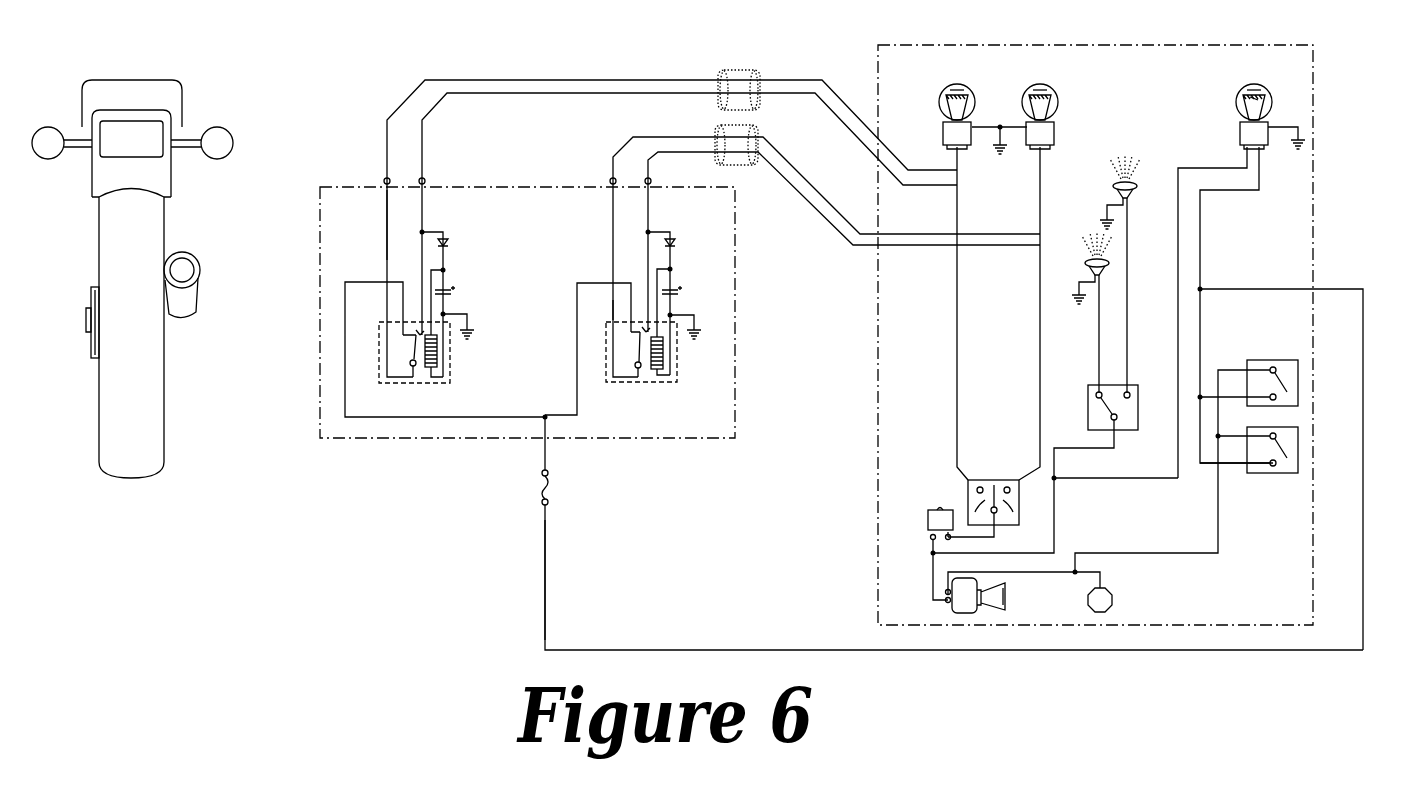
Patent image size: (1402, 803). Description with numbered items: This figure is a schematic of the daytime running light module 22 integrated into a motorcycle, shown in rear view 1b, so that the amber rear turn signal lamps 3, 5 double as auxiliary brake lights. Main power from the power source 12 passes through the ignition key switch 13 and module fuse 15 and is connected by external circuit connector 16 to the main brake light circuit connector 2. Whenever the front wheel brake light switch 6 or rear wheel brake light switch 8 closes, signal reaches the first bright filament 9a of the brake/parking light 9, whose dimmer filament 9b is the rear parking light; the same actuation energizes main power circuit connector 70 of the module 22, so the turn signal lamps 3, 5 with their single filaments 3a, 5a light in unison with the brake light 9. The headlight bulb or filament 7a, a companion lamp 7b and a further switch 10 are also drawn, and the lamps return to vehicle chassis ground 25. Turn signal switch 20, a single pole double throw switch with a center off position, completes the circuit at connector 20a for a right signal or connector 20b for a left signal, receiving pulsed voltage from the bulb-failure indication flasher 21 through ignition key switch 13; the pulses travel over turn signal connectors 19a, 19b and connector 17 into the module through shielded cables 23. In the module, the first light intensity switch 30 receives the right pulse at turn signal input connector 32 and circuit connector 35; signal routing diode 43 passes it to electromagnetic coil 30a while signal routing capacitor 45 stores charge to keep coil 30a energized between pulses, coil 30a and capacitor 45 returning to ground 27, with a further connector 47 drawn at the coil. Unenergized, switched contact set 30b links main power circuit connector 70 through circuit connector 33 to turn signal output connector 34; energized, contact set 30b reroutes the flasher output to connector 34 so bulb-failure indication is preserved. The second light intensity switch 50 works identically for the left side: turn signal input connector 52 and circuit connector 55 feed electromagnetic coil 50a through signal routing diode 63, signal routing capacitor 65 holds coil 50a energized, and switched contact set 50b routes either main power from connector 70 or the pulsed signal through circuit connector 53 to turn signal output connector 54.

The motorcycle rear view 1b is at (92, 198).
The main brake light circuit connector 2 is at (1203, 263).
The turn signal lamp 3 is at (228, 130).
The right lamp bulb 3a is at (1042, 95).
The turn signal lamp 5 is at (43, 128).
The left lamp bulb 5a is at (955, 95).
The front wheel brake light switch 6 is at (1263, 359).
The headlight bulb or filament 7a is at (1085, 242).
The second LED 7b is at (1135, 160).
The rear wheel brake light switch 8 is at (1263, 474).
The brake/parking light 9 is at (158, 121).
The first bright filament 9a is at (1250, 95).
The first dimmer filament 9b is at (1262, 100).
The LED selector switch 10 is at (1138, 432).
The power source 12 is at (1115, 593).
The ignition key switch 13 is at (1022, 596).
The module fuse 15 is at (550, 490).
The external circuit connector 16 is at (543, 540).
The wire 17 is at (1140, 481).
The turn signal connector 19a is at (1034, 355).
The turn signal connector 19b is at (951, 358).
The turn signal switch 20 is at (968, 500).
The turn signal connector 20a is at (1008, 487).
The turn signal connector 20b is at (980, 487).
The bulb-failure indication flasher 21 is at (928, 511).
The daytime running light module 22 is at (318, 186).
The three-strand shielded cable 23 is at (718, 98).
The vehicle chassis ground 25 is at (997, 160).
The ground 27 is at (468, 340).
The first light intensity switch 30 is at (665, 383).
The electromagnetic coil 30a is at (668, 368).
The switched contact set 30b is at (632, 357).
The turn signal input connector 32 is at (646, 179).
The circuit connector 33 is at (612, 314).
The turn signal output connector 34 is at (611, 179).
The circuit connector 35 is at (646, 250).
The signal routing diode 43 is at (675, 241).
The signal routing capacitor 45 is at (680, 292).
The right coil lead 47 is at (652, 290).
The second light intensity switch 50 is at (437, 383).
The electromagnetic coil 50a is at (443, 368).
The switched contact set 50b is at (408, 357).
The turn signal input connector 52 is at (420, 179).
The circuit connector 53 is at (386, 218).
The turn signal output connector 54 is at (385, 179).
The circuit connector 55 is at (420, 247).
The signal routing diode 63 is at (446, 241).
The signal routing capacitor 65 is at (452, 292).
The main power circuit connector 70 is at (368, 282).